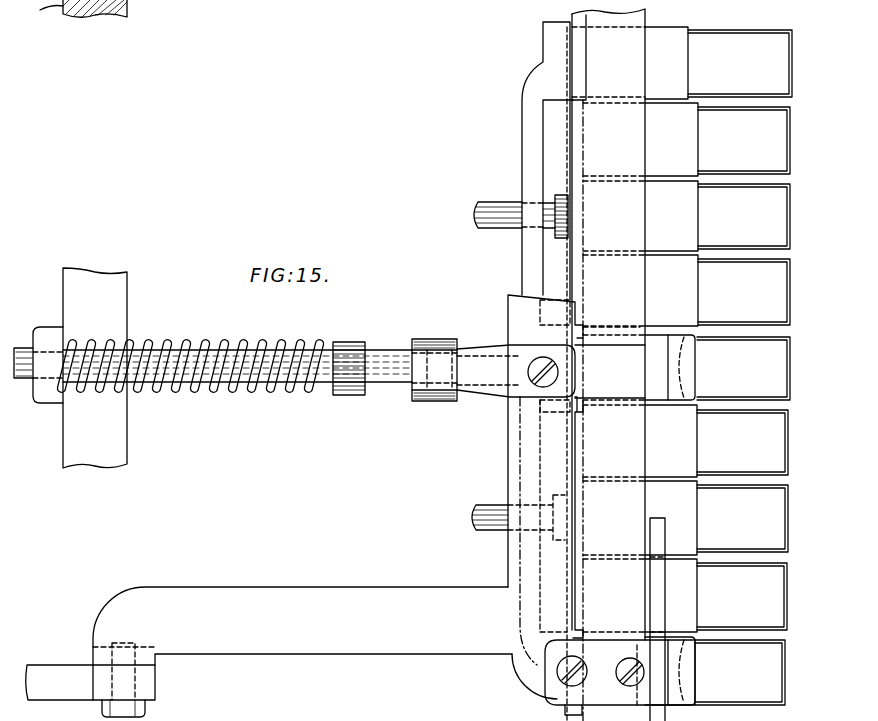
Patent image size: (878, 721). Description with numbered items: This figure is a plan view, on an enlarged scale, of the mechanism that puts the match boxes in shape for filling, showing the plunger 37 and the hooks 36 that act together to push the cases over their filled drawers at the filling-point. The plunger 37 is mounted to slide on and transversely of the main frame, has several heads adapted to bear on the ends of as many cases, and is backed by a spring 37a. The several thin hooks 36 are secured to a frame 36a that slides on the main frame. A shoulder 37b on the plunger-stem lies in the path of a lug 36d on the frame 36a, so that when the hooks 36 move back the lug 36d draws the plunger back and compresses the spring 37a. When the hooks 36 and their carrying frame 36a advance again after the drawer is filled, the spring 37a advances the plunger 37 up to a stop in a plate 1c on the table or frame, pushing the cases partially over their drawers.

The plate 1c is at (608, 365).
The hook 36 is at (697, 366).
The frame 36a is at (360, 652).
The lug 36d is at (520, 466).
The plunger 37 is at (537, 76).
The spring 37a is at (278, 392).
The shoulder 37b is at (440, 401).